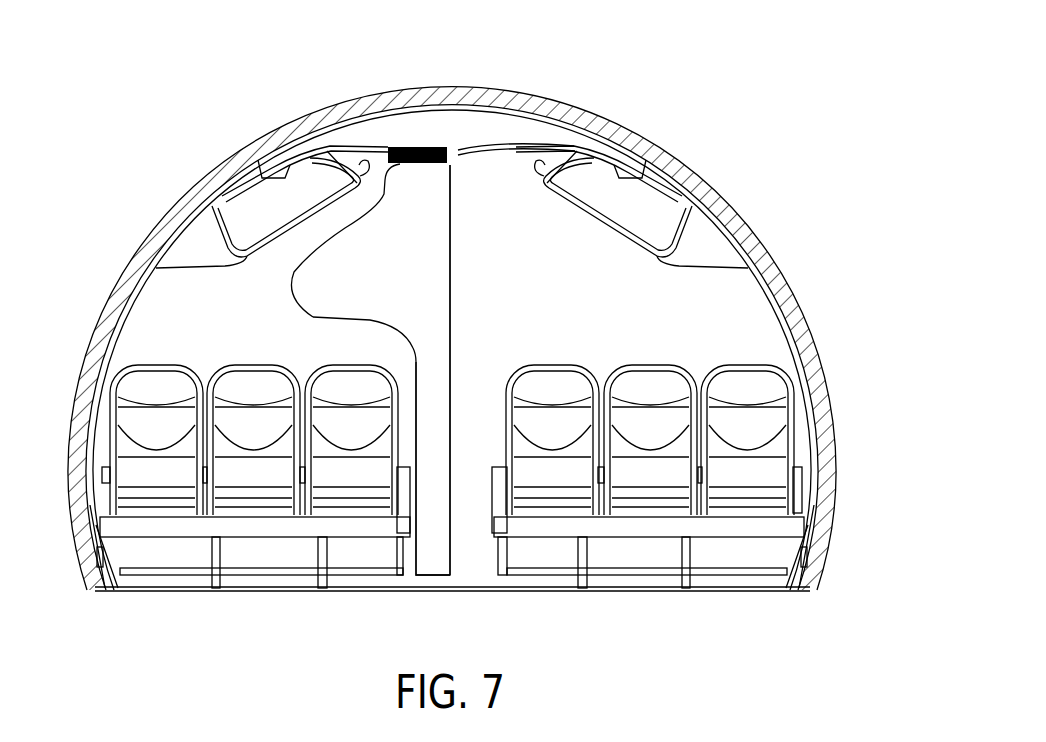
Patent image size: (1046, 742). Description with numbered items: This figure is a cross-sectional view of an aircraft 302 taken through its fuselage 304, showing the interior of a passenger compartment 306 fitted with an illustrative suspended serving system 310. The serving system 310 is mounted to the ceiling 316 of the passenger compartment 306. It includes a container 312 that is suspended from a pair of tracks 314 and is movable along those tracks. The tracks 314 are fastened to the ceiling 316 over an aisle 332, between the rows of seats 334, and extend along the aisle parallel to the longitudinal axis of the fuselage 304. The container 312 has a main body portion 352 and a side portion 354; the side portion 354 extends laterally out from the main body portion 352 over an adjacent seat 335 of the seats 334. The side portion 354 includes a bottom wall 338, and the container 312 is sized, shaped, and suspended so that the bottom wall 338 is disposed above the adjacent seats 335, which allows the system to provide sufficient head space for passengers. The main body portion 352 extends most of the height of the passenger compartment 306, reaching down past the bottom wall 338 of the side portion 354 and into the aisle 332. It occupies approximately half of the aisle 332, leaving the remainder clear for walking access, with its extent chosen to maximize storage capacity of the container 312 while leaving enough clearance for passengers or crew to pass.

The aircraft 302 is at (168, 112).
The suspended serving system 310 is at (162, 185).
The passenger compartment 306 is at (142, 337).
The fuselage 304 is at (650, 150).
The tracks 314 is at (435, 145).
The ceiling 316 is at (486, 144).
The container 312 is at (435, 327).
The main body portion 352 is at (435, 368).
The side portion 354 is at (300, 283).
The bottom wall 338 is at (373, 322).
The seats 334 is at (770, 390).
The adjacent seat 335 is at (545, 505).
The aisle 332 is at (471, 584).